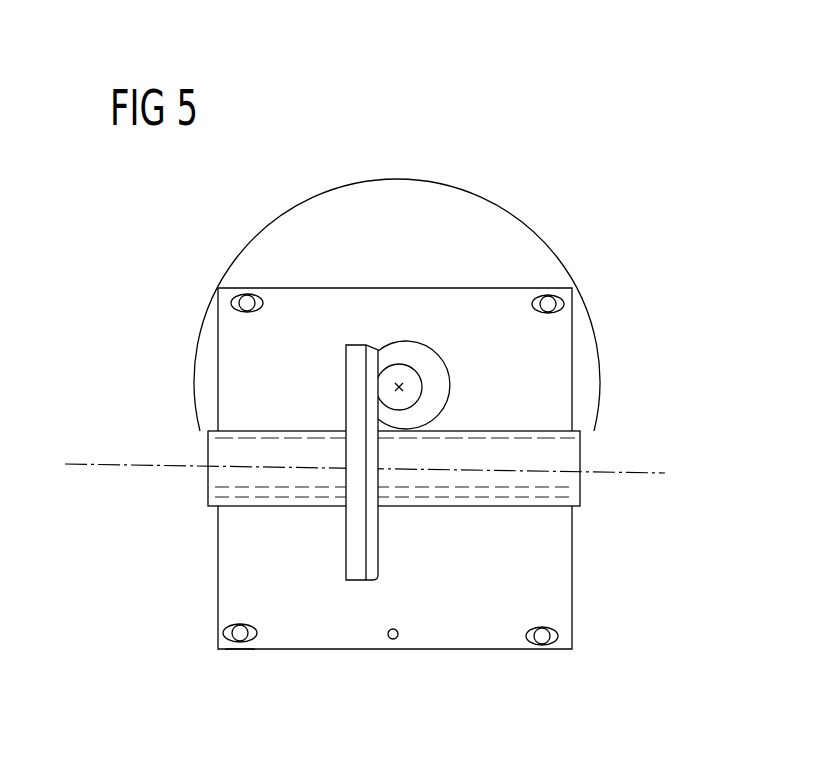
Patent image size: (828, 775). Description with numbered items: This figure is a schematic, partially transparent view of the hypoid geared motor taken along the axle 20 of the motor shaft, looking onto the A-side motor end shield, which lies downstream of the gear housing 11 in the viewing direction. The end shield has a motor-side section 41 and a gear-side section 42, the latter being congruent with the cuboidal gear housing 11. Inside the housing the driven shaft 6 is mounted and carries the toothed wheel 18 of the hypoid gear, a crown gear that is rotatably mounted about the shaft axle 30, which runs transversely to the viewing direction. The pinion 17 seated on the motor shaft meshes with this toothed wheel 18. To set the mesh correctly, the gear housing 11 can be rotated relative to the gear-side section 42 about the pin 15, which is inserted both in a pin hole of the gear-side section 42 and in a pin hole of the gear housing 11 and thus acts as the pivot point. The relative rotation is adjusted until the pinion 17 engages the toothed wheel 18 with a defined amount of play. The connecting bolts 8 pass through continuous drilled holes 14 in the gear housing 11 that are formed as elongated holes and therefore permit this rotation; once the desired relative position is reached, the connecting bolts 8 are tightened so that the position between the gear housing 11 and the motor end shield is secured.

The motor-side section 41 is at (403, 178).
The shaft axle 30 is at (118, 463).
The gear housing 11 is at (454, 468).
The gear-side section 42 is at (573, 582).
The continuous drilled holes 14 is at (222, 636).
The connecting bolts 8 is at (239, 650).
The pin 15 is at (394, 648).
The driven shaft 6 is at (578, 496).
The pinion 17 is at (448, 402).
The axle of the motor shaft 20 is at (401, 384).
The toothed wheel 18 is at (356, 551).